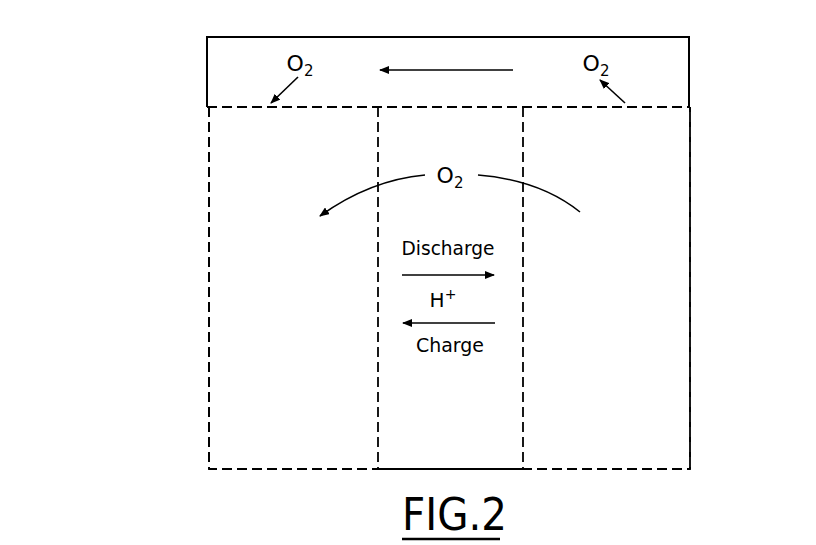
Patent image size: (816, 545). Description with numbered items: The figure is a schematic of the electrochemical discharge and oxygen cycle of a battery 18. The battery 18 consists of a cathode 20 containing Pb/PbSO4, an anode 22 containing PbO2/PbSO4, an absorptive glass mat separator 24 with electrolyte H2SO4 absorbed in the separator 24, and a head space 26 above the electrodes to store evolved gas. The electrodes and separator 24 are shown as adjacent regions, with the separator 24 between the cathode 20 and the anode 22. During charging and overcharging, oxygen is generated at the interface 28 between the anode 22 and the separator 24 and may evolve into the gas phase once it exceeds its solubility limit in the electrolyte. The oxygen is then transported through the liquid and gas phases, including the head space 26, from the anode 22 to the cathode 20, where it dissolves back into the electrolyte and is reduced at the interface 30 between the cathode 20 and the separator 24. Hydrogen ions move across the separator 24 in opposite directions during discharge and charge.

The battery 18 is at (690, 92).
The cathode 20 is at (228, 252).
The anode 22 is at (682, 243).
The absorptive glass mat separator 24 is at (498, 458).
The head space 26 is at (680, 72).
The interface between anode and separator 28 is at (523, 405).
The interface between cathode and separator 30 is at (378, 408).